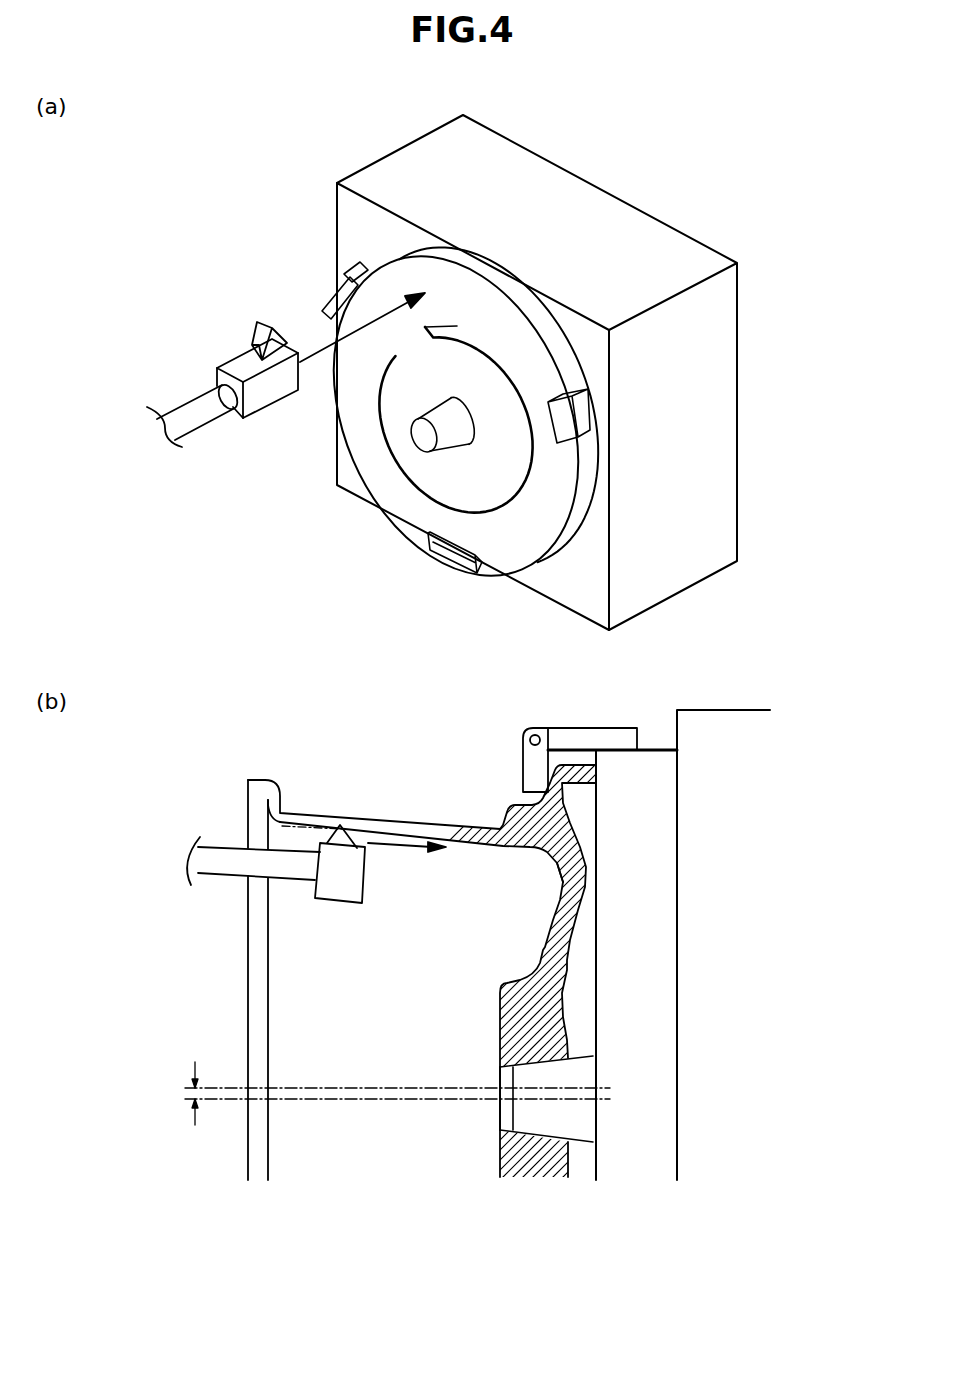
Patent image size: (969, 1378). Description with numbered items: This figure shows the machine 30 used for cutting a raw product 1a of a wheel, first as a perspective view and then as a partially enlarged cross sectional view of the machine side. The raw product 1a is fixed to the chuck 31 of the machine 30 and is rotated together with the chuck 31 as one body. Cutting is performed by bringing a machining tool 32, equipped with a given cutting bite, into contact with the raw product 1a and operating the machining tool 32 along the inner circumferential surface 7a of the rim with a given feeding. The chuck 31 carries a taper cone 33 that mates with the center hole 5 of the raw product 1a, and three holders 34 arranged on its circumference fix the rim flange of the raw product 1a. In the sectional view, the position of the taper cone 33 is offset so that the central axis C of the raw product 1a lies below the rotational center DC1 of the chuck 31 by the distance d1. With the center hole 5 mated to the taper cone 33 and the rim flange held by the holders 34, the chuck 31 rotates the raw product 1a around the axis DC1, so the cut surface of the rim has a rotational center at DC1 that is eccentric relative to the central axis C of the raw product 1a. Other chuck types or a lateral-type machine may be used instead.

The machine 30 is at (644, 184).
The chuck 31 is at (531, 534).
The machining tool 32 is at (238, 365).
The taper cone 33 is at (420, 436).
The holders 34 is at (447, 556).
The inner circumferential surface 7a is at (467, 846).
The raw product 1a is at (500, 1033).
The center hole 5 is at (497, 1120).
The rotational center DC1 is at (355, 1088).
The central axis C is at (355, 1100).
The distance d1 is at (173, 1093).